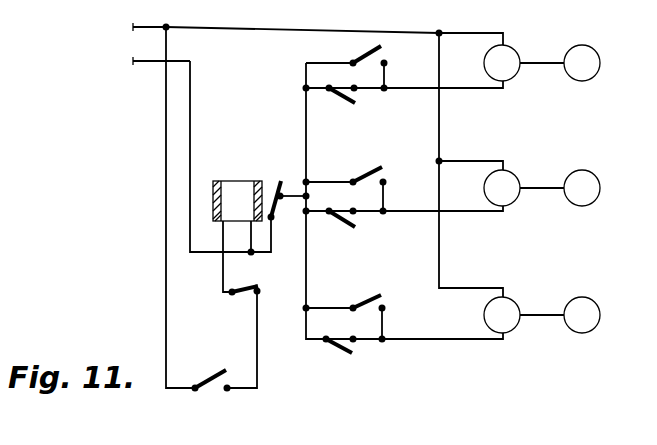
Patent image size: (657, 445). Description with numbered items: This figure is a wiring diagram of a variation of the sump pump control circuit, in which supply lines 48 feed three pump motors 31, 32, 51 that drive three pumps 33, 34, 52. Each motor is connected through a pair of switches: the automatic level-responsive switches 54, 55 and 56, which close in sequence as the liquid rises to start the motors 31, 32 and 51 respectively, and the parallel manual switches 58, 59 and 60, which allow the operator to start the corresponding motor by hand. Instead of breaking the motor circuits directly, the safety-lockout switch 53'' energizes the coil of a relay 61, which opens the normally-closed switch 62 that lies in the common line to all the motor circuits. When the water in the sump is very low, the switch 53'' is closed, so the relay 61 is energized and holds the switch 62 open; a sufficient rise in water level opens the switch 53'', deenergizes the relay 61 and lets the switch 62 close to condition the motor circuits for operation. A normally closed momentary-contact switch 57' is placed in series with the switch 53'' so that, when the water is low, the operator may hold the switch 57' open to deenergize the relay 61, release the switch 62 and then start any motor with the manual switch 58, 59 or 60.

The power supply terminals 48 is at (130, 60).
The relay 61 is at (234, 181).
The normally-closed switch 62 is at (278, 184).
The normally closed switch 57' is at (263, 280).
The safety-lockout switch 53'' is at (215, 396).
The manual switch 60 is at (364, 52).
The automatic switch 56 is at (346, 106).
The manual switch 59 is at (366, 173).
The automatic switch 55 is at (344, 226).
The manual switch 58 is at (368, 301).
The automatic switch 54 is at (342, 352).
The motor 51 is at (512, 76).
The pump 52 is at (584, 80).
The motor 32 is at (512, 201).
The pump 34 is at (584, 202).
The motor 31 is at (512, 329).
The pump 33 is at (584, 331).